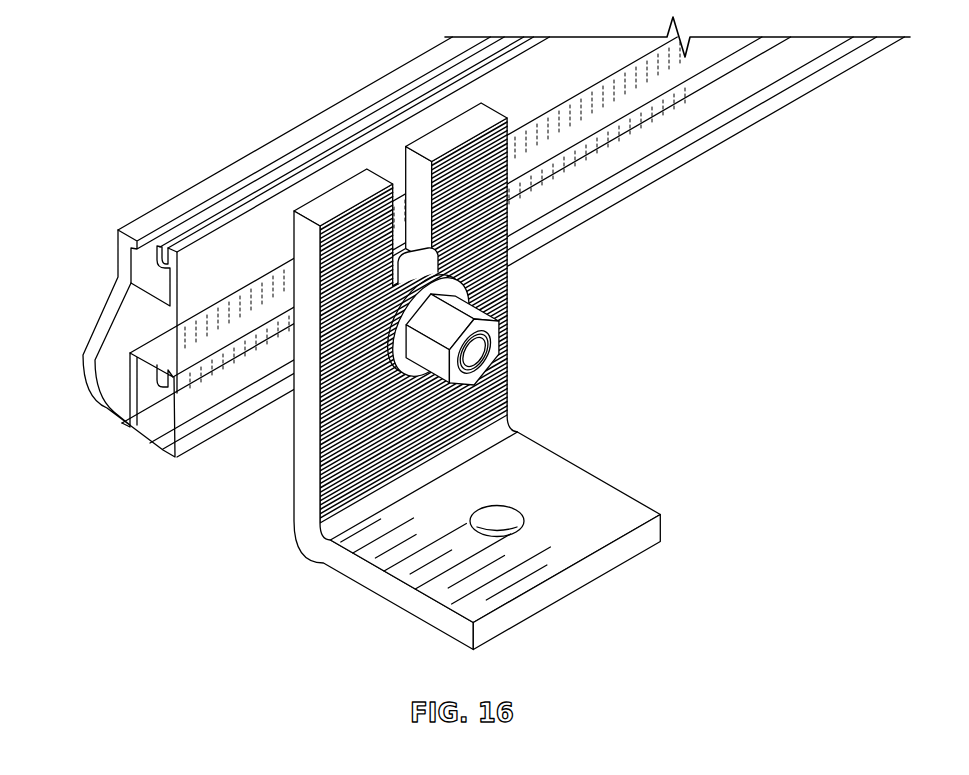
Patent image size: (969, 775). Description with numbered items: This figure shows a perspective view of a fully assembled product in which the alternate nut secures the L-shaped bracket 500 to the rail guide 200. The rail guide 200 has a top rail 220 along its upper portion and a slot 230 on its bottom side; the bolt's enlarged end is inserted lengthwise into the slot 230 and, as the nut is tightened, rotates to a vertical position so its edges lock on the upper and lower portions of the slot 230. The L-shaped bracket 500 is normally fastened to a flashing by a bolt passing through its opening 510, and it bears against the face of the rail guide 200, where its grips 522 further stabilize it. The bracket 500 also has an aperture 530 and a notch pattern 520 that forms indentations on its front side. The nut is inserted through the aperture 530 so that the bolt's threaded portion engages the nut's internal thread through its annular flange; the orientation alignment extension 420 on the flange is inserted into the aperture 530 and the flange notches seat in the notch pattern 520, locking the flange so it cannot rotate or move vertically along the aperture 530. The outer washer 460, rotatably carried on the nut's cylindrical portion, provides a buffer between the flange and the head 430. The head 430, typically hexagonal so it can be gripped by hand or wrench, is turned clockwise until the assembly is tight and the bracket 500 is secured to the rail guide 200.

The rail guide 200 is at (473, 260).
The top rail 220 is at (118, 231).
The slot 230 is at (152, 390).
The L-shaped bracket 500 is at (456, 376).
The opening 510 is at (493, 517).
The grips 522 is at (290, 448).
The outer washer 460 is at (318, 478).
The aperture 530 is at (418, 190).
The orientation alignment extension 420 is at (413, 265).
The notch pattern 520 is at (497, 320).
The head 430 is at (497, 356).